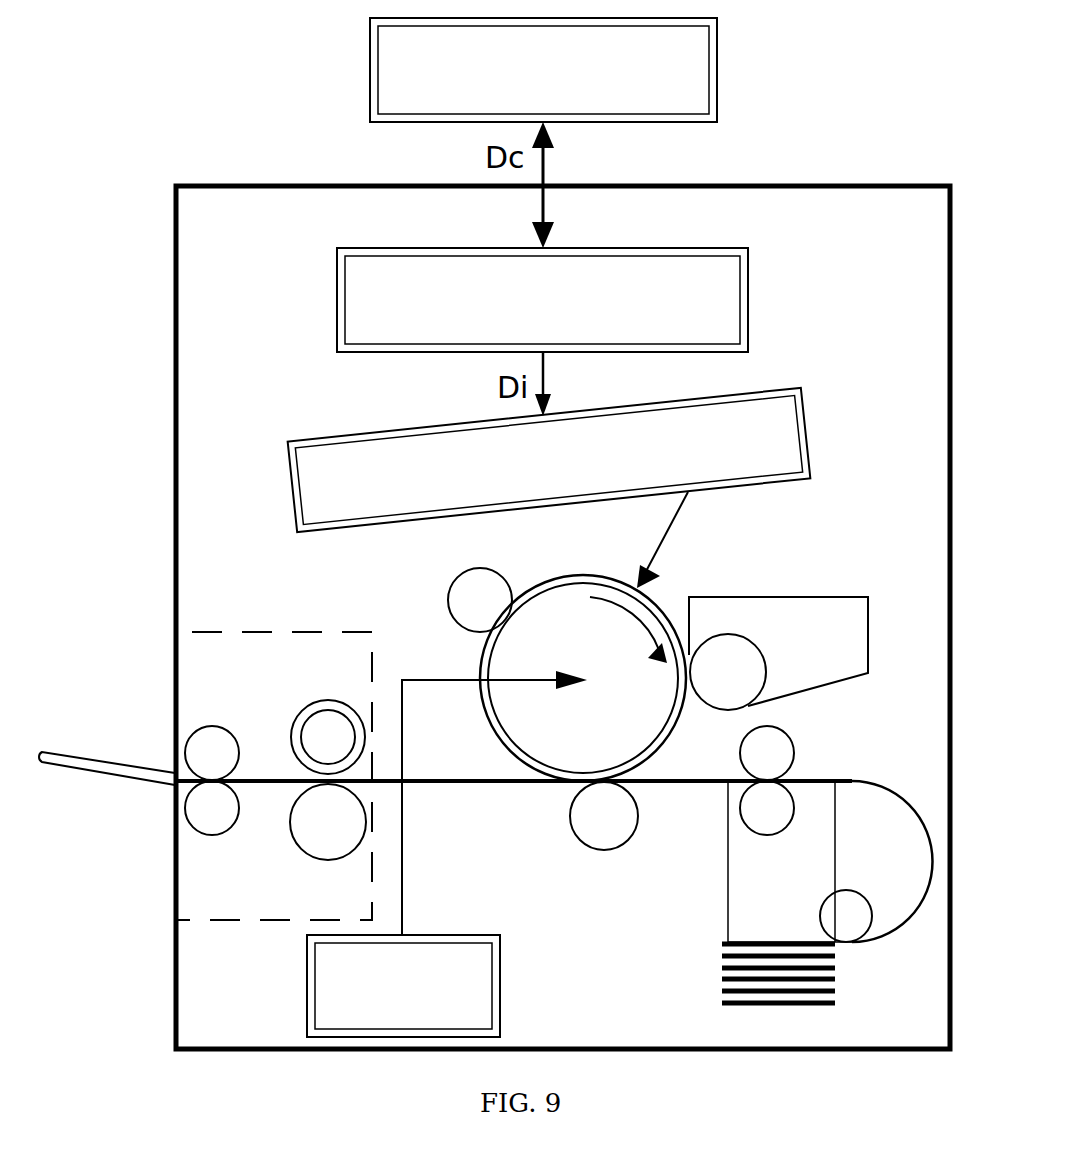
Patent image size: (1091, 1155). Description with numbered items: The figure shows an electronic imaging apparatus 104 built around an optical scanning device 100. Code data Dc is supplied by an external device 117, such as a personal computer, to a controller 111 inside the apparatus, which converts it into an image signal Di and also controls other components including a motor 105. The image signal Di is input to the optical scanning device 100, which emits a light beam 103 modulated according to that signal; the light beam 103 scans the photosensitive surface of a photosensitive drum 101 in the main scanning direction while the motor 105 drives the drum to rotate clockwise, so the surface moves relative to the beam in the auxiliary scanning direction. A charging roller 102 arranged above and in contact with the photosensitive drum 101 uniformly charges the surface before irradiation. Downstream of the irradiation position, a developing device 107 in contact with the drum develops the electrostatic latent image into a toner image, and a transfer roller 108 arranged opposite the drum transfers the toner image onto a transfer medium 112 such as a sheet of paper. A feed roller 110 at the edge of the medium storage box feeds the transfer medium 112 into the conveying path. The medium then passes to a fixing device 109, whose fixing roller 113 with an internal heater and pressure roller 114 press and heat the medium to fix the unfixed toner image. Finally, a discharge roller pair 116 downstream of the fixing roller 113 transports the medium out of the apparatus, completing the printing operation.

The optical scanning device 100 is at (803, 410).
The photosensitive drum 101 is at (504, 714).
The charging roller 102 is at (455, 583).
The light beam 103 is at (660, 547).
The electronic imaging apparatus 104 is at (878, 184).
The motor 105 is at (307, 962).
The developing device 107 is at (920, 610).
The transfer roller 108 is at (601, 845).
The fixing device 109 is at (285, 632).
The feed roller 110 is at (850, 893).
The controller 111 is at (748, 262).
The transfer medium 112 is at (457, 784).
The fixing roller 113 is at (316, 730).
The pressure roller 114 is at (306, 836).
The discharge roller pair 116 is at (213, 736).
The external device 117 is at (717, 42).